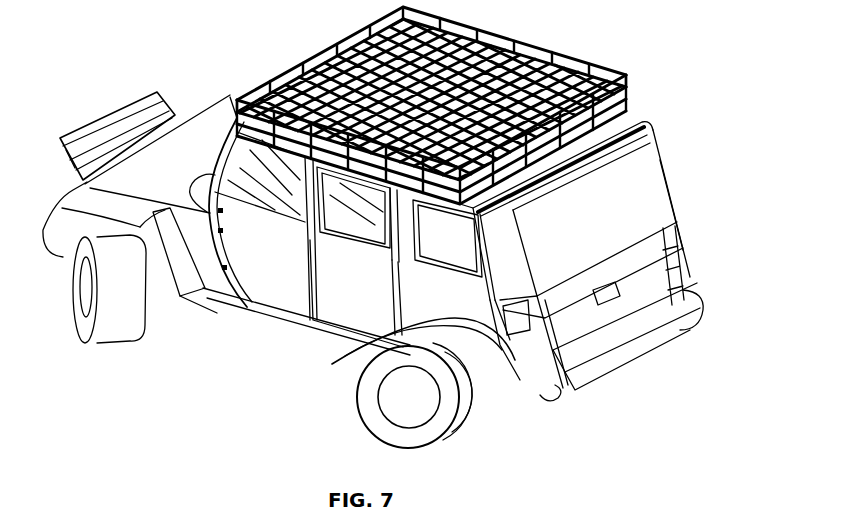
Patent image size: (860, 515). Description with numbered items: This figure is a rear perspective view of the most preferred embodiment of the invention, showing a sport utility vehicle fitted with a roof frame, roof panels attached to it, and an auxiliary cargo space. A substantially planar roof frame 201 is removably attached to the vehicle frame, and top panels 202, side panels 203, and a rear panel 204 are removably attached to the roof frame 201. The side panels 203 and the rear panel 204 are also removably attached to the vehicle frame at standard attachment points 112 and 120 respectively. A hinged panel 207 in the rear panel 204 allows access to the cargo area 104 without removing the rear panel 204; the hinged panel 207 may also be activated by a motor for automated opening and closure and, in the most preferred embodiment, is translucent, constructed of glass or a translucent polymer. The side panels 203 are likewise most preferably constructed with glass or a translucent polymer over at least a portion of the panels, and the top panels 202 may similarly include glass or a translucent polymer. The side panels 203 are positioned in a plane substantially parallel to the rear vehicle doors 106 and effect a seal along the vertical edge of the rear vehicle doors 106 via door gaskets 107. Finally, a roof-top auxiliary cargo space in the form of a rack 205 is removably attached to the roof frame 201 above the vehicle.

The cargo area 104 is at (630, 218).
The rear vehicle doors 106 is at (302, 230).
The door gaskets 107 is at (380, 213).
The standard attachment points 112 is at (550, 296).
The standard attachment points 120 is at (550, 296).
The roof frame 201 is at (522, 160).
The top panels 202 is at (560, 143).
The side panels 203 is at (448, 262).
The rear panel 204 is at (668, 174).
The rack 205 is at (563, 51).
The hinged panel 207 is at (596, 237).